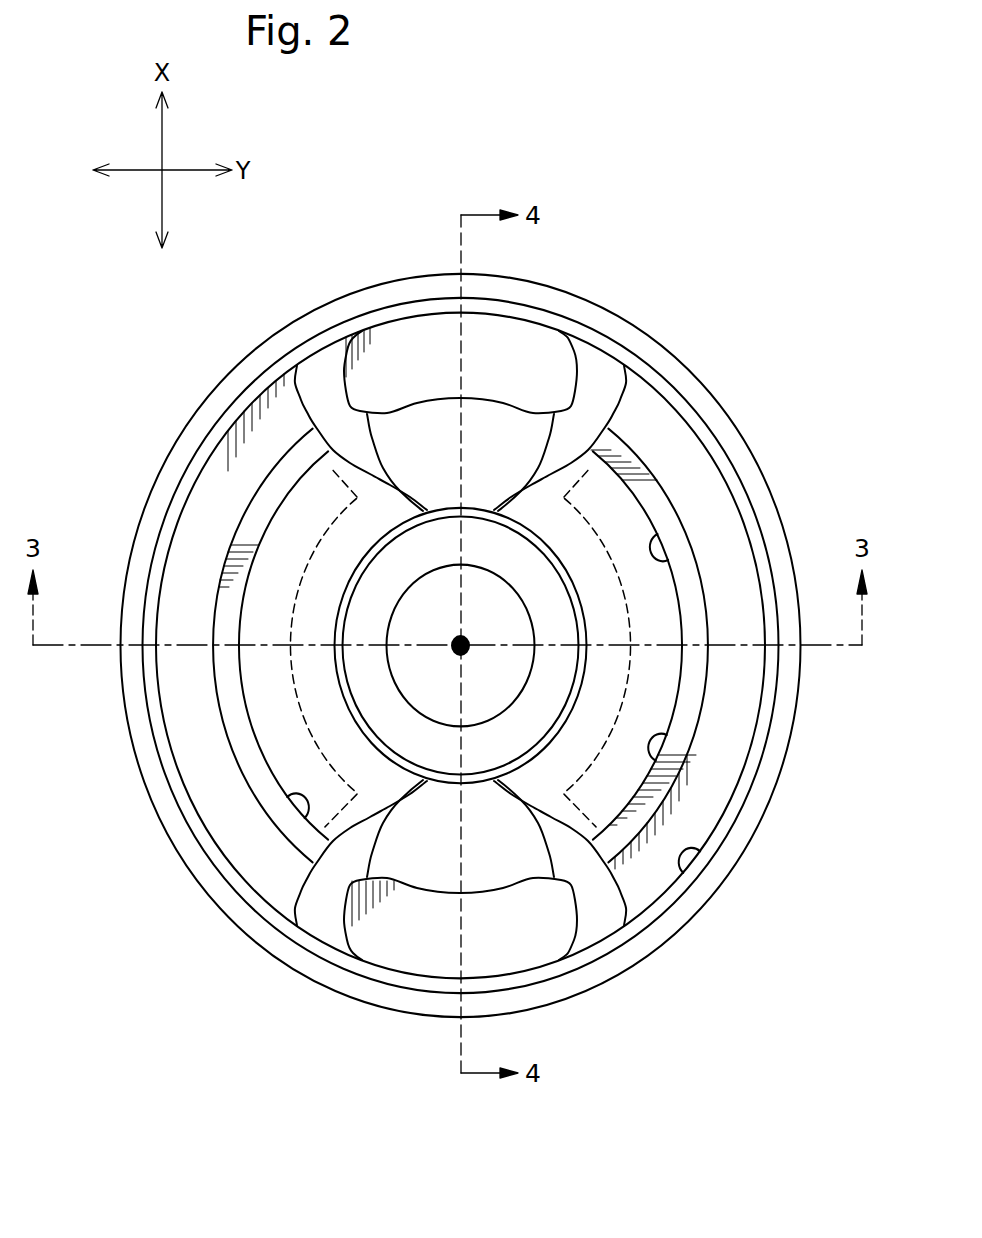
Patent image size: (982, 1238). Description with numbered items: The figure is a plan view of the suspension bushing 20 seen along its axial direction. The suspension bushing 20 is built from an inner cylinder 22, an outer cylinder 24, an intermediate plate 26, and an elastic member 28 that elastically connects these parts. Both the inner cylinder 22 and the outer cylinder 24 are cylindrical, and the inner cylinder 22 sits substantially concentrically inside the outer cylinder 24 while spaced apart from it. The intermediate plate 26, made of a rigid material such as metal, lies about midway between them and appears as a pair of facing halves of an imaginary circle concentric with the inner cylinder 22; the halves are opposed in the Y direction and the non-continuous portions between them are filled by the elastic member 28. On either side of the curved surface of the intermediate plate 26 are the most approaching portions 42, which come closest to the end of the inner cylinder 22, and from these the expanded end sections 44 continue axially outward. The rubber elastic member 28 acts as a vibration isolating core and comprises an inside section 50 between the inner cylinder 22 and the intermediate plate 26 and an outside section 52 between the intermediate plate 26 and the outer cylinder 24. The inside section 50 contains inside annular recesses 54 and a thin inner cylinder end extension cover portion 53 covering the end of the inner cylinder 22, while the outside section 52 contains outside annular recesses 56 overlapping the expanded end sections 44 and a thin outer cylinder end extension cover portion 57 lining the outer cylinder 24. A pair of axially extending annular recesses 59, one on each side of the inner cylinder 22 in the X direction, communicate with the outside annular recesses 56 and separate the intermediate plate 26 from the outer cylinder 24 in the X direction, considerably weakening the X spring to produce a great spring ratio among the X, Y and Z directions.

The suspension bushing 20 is at (120, 745).
The inner cylinder 22 is at (393, 567).
The outer cylinder 24 is at (130, 550).
The intermediate plate 26 is at (250, 519).
The elastic member 28 is at (90, 880).
The most approaching portion 42 is at (300, 683).
The expanded end section 44 is at (660, 530).
The inside section 50 is at (333, 732).
The outside section 52 is at (218, 823).
The inner cylinder end extension cover portion 53 is at (587, 675).
The inside annular recess 54 is at (653, 728).
The outside annular recess 56 is at (707, 847).
The outer cylinder end extension cover portion 57 is at (747, 512).
The annular recess 59 is at (407, 347).